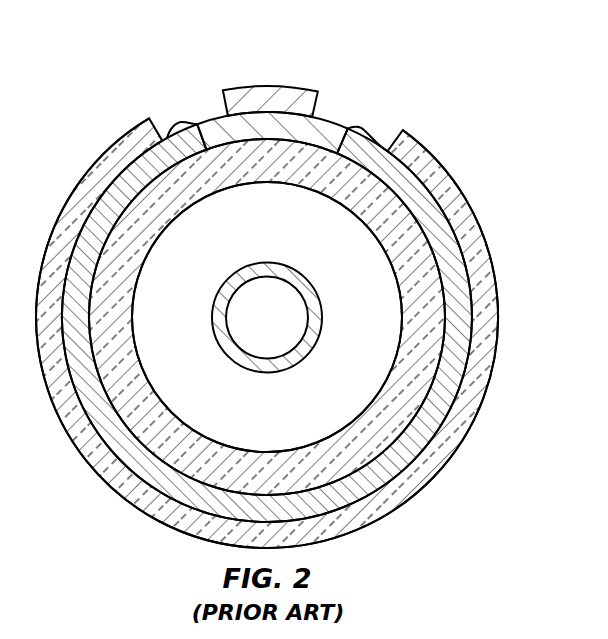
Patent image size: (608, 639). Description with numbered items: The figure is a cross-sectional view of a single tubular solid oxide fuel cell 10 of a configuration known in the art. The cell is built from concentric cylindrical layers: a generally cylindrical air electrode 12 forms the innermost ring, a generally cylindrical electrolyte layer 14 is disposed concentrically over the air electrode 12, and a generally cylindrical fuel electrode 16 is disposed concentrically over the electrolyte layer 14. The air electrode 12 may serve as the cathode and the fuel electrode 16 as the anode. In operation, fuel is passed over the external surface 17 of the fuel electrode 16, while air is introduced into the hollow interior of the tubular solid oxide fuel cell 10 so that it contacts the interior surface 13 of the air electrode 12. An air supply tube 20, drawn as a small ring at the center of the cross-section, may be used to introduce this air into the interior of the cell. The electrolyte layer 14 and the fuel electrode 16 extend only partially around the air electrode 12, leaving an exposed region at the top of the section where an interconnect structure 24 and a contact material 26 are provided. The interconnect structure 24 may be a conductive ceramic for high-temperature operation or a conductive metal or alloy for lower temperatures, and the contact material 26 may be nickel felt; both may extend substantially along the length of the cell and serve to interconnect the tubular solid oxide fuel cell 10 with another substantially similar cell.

The tubular solid oxide fuel cell 10 is at (122, 88).
The air electrode 12 is at (396, 223).
The interior surface 13 is at (369, 222).
The electrolyte layer 14 is at (436, 227).
The fuel electrode 16 is at (474, 245).
The external surface 17 is at (498, 350).
The air supply tube 20 is at (263, 261).
The interconnect structure 24 is at (322, 133).
The contact material 26 is at (268, 96).